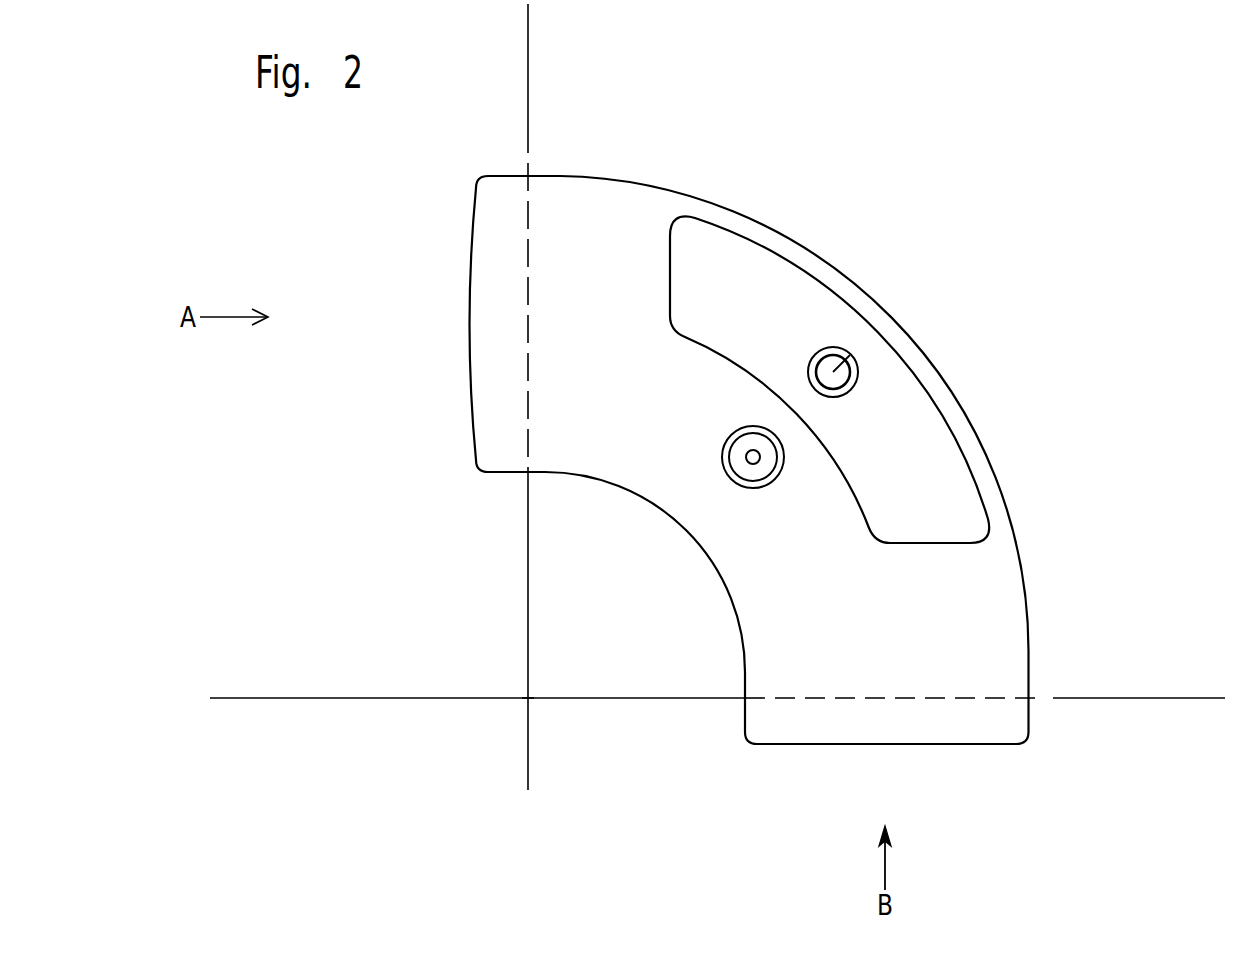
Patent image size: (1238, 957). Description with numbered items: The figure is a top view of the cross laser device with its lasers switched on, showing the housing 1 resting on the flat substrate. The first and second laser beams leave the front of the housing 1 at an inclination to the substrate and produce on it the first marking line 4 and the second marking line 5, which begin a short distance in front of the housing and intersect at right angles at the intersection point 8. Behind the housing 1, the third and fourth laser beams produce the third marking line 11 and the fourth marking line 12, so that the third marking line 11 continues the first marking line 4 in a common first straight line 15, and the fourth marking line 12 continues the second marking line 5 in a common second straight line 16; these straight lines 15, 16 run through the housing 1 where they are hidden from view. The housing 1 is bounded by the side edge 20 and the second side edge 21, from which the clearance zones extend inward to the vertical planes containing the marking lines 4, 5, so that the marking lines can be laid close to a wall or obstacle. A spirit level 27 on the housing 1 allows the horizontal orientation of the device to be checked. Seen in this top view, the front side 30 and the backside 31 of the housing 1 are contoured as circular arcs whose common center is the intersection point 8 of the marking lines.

The housing 1 is at (997, 552).
The first marking line 4 is at (667, 699).
The second marking line 5 is at (523, 597).
The intersection point 8 is at (527, 700).
The third marking line 11 is at (1127, 697).
The fourth marking line 12 is at (528, 125).
The first straight line 15 is at (883, 697).
The second straight line 16 is at (528, 255).
The side edge 20 is at (878, 745).
The second side edge 21 is at (468, 330).
The spirit level 27 is at (755, 437).
The front side 30 is at (703, 547).
The backside 31 is at (917, 342).